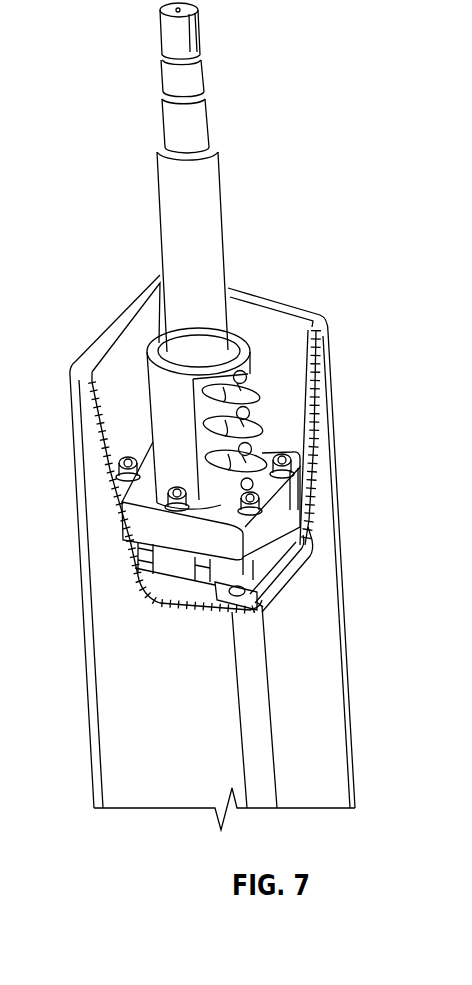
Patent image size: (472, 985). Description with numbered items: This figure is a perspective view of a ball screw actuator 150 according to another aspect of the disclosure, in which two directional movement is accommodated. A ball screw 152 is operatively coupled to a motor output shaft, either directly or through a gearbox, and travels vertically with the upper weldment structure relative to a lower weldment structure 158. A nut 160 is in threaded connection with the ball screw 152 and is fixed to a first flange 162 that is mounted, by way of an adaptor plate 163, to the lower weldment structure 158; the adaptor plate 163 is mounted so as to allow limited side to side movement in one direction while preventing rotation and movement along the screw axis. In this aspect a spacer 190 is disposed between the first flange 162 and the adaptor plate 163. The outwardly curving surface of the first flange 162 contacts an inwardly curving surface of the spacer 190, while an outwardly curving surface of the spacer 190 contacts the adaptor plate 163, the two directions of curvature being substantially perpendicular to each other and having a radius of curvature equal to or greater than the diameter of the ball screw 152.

The ball screw actuator 150 is at (258, 125).
The ball screw 152 is at (173, 40).
The lower weldment structure 158 is at (333, 636).
The nut 160 is at (150, 378).
The first flange 162 is at (280, 447).
The adaptor plate 163 is at (143, 585).
The spacer 190 is at (290, 527).